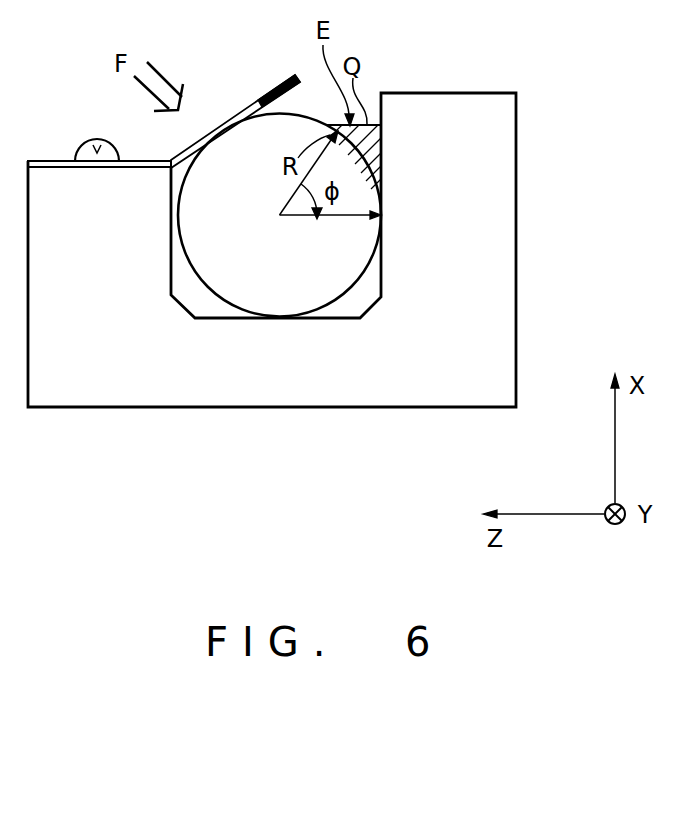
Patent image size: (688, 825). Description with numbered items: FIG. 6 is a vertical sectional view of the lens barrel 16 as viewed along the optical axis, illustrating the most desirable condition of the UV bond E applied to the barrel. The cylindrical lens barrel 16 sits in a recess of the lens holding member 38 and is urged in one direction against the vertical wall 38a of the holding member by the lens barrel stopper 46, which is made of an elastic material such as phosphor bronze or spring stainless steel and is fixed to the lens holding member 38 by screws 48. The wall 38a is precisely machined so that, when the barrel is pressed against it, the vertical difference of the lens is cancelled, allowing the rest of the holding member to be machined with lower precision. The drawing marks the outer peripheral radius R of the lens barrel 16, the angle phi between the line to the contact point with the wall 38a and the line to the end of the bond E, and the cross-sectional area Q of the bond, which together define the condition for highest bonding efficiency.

The lens barrel 16 is at (312, 114).
The lens holding member 38 is at (505, 198).
The vertical wall 38a is at (380, 94).
The lens barrel stopper 46 is at (240, 114).
The screws 48 is at (88, 147).